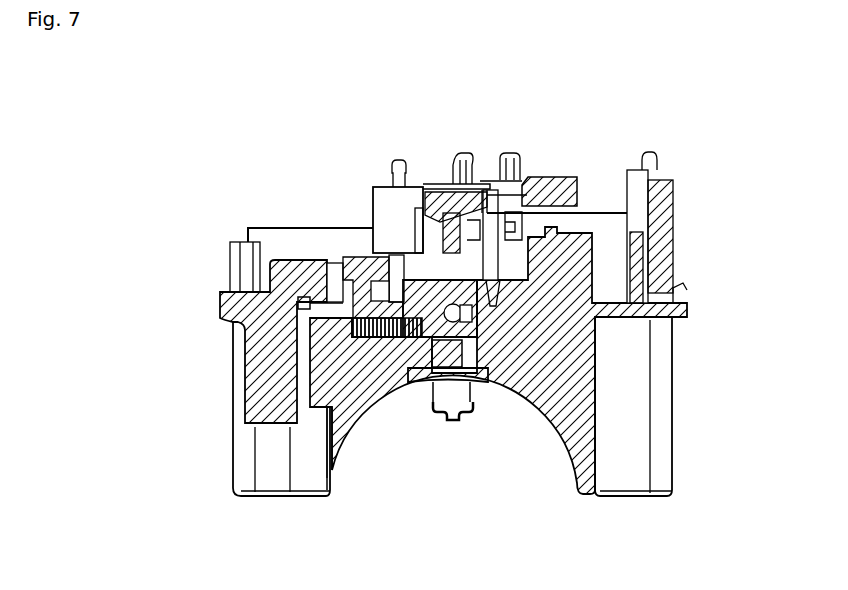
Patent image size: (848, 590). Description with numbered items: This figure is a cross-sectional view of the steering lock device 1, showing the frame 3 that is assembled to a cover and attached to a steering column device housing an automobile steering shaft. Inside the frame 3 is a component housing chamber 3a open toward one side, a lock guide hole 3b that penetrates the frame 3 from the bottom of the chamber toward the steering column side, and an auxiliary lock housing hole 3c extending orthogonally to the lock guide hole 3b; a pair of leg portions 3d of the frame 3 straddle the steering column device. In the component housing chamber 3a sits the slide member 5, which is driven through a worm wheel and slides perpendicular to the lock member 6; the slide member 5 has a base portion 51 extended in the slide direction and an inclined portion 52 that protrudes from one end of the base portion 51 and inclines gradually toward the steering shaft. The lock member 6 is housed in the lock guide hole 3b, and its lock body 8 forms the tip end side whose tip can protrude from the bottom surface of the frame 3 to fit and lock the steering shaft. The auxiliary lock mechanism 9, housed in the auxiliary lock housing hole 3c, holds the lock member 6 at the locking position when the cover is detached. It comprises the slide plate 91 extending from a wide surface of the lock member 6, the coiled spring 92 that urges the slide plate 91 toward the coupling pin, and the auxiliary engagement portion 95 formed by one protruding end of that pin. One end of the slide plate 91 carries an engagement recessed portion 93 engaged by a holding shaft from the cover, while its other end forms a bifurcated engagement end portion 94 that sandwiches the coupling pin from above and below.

The steering lock device 1 is at (190, 194).
The frame 3 is at (677, 382).
The component housing chamber 3a is at (305, 215).
The lock guide hole 3b is at (448, 223).
The auxiliary lock housing hole 3c is at (308, 400).
The leg portions 3d is at (240, 453).
The slide member 5 is at (570, 180).
The base portion 51 is at (540, 180).
The inclined portion 52 is at (470, 180).
The lock member 6 is at (437, 405).
The lock body 8 is at (474, 404).
The auxiliary lock mechanism 9 is at (379, 374).
The slide plate 91 is at (297, 301).
The coiled spring 92 is at (347, 332).
The engagement recessed portion 93 is at (372, 258).
The bifurcated engagement end portion 94 is at (493, 332).
The auxiliary engagement portion 95 is at (533, 310).